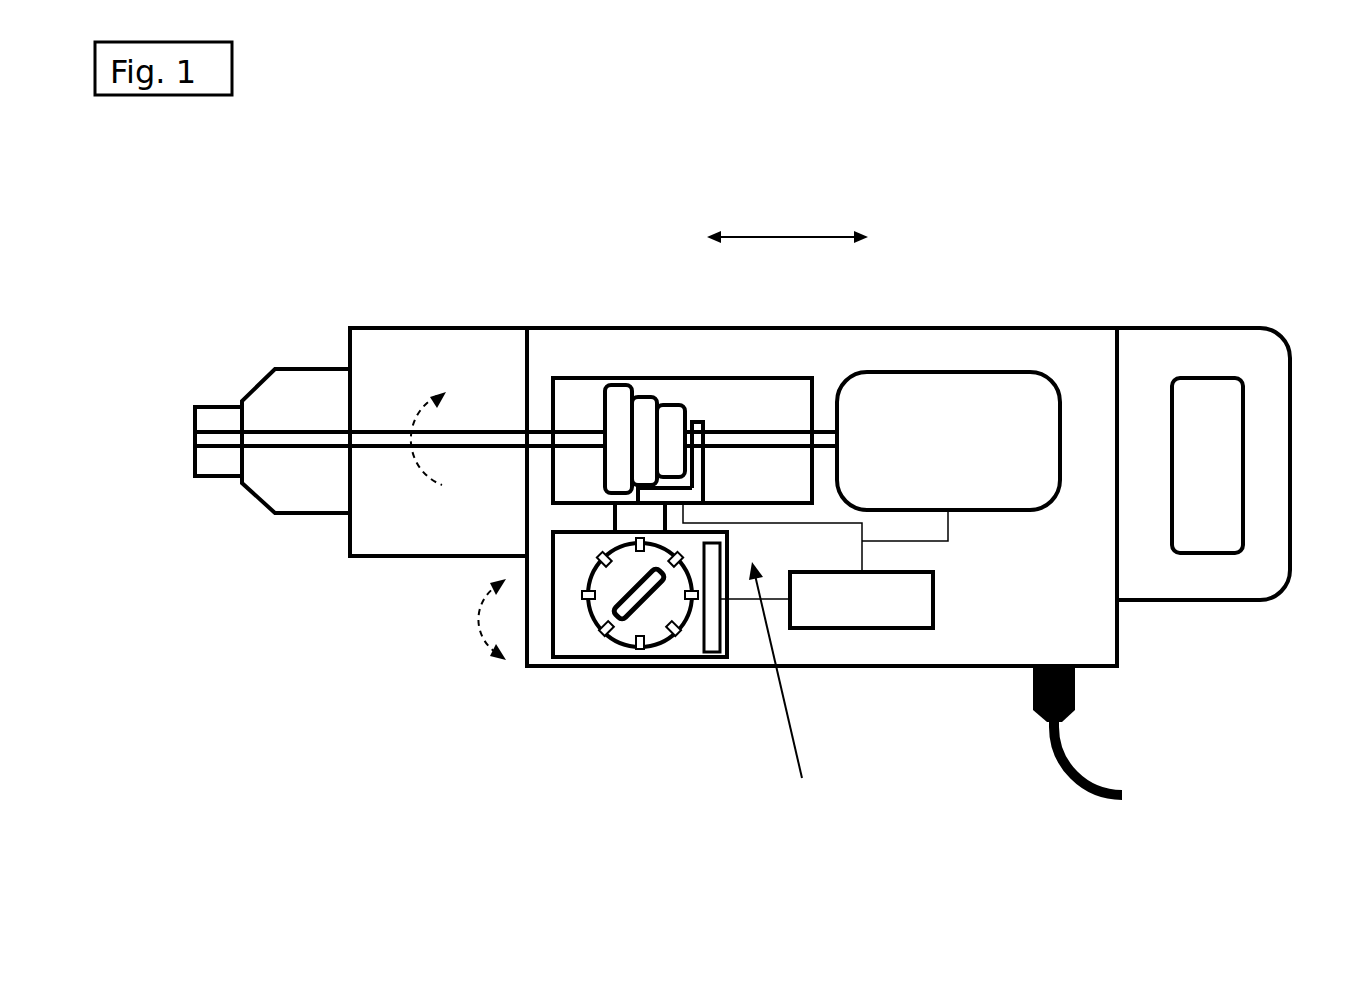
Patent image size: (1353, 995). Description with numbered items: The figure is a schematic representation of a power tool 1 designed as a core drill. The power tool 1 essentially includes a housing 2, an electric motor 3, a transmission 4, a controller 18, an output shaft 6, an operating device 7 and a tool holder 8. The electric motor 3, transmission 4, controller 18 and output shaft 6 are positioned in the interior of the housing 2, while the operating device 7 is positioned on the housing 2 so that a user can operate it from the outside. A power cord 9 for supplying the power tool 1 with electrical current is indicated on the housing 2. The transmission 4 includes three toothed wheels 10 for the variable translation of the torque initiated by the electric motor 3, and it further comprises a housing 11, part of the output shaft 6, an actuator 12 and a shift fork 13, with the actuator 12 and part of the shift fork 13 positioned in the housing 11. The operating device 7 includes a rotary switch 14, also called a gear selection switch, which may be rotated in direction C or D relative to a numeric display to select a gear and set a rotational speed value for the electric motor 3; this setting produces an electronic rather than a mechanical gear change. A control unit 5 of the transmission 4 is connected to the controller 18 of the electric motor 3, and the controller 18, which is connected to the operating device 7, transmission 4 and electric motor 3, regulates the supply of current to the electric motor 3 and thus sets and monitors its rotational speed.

The power tool 1 is at (1235, 171).
The housing 2 is at (1078, 635).
The electric motor 3 is at (955, 397).
The transmission 4 is at (575, 387).
The control unit 5 is at (710, 652).
The output shaft 6 is at (775, 440).
The operating device 7 is at (578, 640).
The tool holder 8 is at (288, 388).
The power cord 9 is at (1078, 782).
The toothed wheels 10 is at (693, 373).
The housing 11 is at (785, 688).
The actuator 12 is at (650, 618).
The shift fork 13 is at (700, 427).
The rotary switch 14 is at (617, 625).
The controller 18 is at (868, 614).